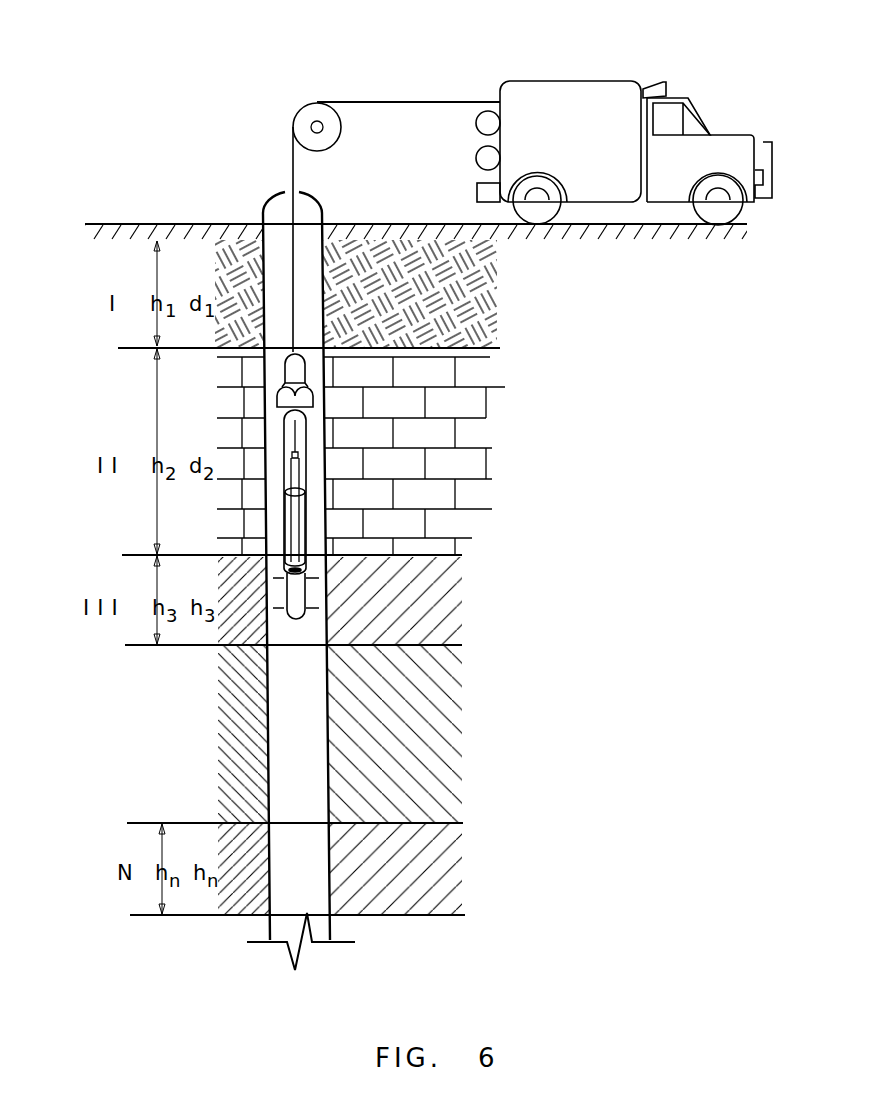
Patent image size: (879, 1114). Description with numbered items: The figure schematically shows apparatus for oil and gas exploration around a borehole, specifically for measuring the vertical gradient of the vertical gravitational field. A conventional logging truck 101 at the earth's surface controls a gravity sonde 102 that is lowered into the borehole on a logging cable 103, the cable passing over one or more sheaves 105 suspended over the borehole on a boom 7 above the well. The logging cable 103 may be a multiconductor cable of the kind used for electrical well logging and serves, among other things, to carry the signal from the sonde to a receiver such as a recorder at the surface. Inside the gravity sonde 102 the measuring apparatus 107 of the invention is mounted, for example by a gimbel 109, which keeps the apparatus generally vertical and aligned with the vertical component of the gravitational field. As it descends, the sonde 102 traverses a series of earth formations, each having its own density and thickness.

The boom 7 is at (387, 102).
The logging truck 101 is at (567, 80).
The sheave 105 is at (297, 113).
The logging cable 103 is at (293, 299).
The apparatus 107 is at (296, 465).
The gravity sonde 102 is at (303, 500).
The gimbel 109 is at (303, 530).